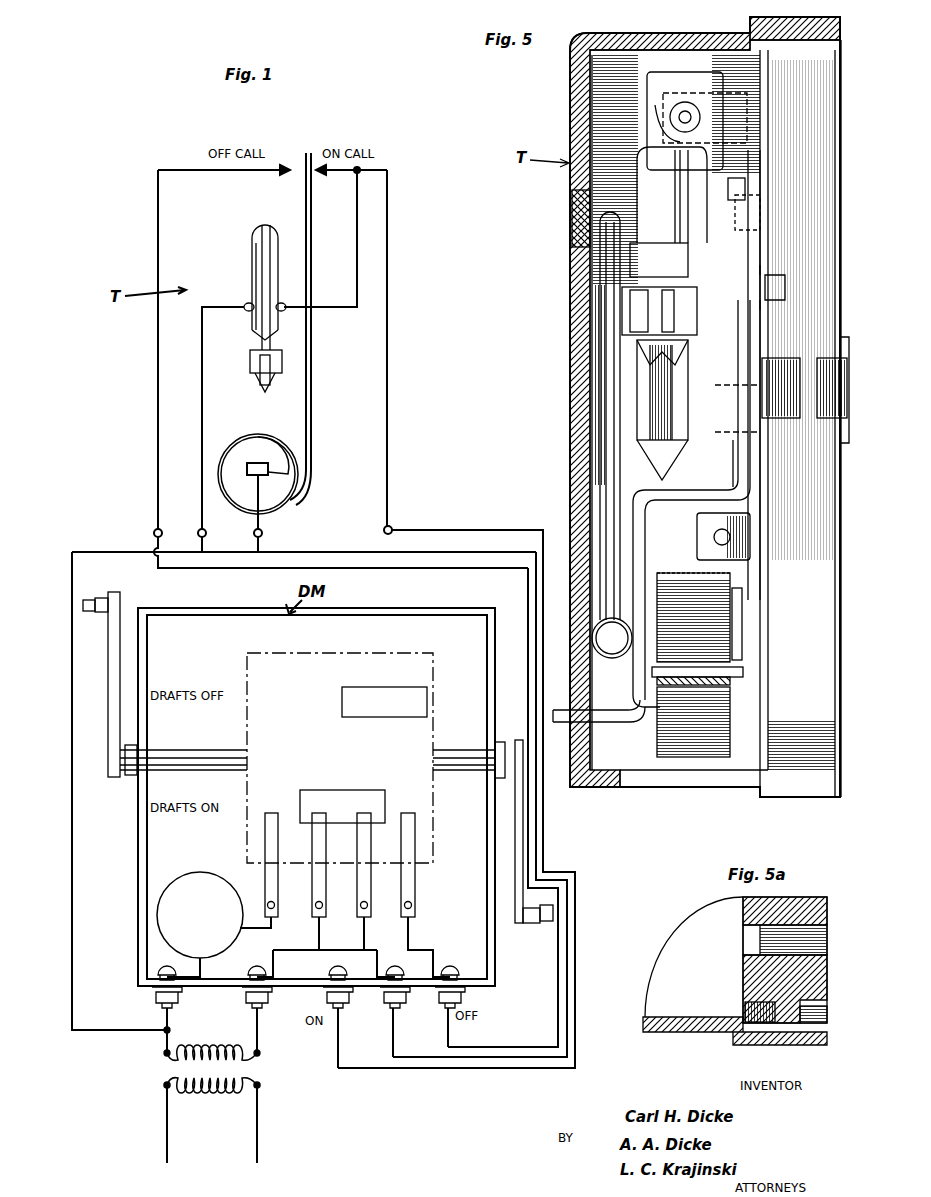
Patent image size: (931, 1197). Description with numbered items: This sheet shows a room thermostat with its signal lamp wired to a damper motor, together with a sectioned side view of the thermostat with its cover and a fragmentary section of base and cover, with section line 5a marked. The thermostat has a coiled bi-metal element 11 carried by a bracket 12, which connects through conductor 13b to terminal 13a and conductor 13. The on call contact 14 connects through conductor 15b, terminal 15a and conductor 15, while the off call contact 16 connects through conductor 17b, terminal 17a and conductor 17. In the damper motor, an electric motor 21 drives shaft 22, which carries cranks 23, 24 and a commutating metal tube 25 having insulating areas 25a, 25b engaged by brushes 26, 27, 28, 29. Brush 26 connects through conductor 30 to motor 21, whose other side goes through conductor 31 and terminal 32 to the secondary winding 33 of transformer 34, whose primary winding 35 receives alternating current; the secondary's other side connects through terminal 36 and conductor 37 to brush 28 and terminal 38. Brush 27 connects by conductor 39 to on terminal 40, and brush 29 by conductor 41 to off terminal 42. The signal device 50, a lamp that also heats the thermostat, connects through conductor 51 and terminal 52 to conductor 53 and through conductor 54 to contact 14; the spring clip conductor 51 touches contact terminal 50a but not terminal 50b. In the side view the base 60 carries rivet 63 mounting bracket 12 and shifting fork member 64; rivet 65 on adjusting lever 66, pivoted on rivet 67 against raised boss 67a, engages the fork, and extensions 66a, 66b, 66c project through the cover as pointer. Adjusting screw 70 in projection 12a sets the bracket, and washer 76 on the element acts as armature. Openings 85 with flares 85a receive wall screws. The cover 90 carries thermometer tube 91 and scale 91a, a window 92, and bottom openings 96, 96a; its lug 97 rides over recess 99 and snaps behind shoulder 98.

In FIG. 1, the coiled bi-metal element 11 is at (300, 500).
In FIG. 5, the coiled bi-metal element 11 is at (731, 732).
In FIG. 1, the bracket 12 is at (262, 456).
In FIG. 5, the bracket 12 is at (732, 688).
In FIG. 5, the projection 12a is at (697, 522).
In FIG. 1, the conductor 13 is at (335, 552).
In FIG. 1, the terminal 13a is at (263, 533).
In FIG. 1, the conductor 13b is at (262, 488).
In FIG. 1, the on call contact 14 is at (320, 172).
In FIG. 1, the conductor 15 is at (462, 531).
In FIG. 1, the terminal 15a is at (393, 530).
In FIG. 1, the conductor 15b is at (388, 278).
In FIG. 1, the off call contact 16 is at (284, 175).
In FIG. 1, the conductor 17 is at (398, 572).
In FIG. 1, the terminal 17a is at (154, 532).
In FIG. 1, the conductor 17b is at (156, 401).
In FIG. 1, the electric motor 21 is at (212, 864).
In FIG. 1, the shaft 22 is at (206, 740).
In FIG. 1, the crank 23 is at (107, 698).
In FIG. 1, the crank 24 is at (518, 928).
In FIG. 1, the metal tube 25 is at (435, 815).
In FIG. 1, the insulating area 25a is at (384, 777).
In FIG. 1, the insulating area 25b is at (372, 676).
In FIG. 1, the brush 26 is at (265, 892).
In FIG. 1, the brush 27 is at (312, 892).
In FIG. 1, the brush 28 is at (357, 890).
In FIG. 1, the brush 29 is at (415, 890).
In FIG. 1, the conductor 30 is at (250, 932).
In FIG. 1, the conductor 31 is at (202, 966).
In FIG. 1, the terminal 32 is at (152, 998).
In FIG. 1, the secondary winding 33 is at (212, 1040).
In FIG. 1, the transformer 34 is at (152, 1072).
In FIG. 1, the primary winding 35 is at (198, 1095).
In FIG. 1, the terminal 36 is at (242, 998).
In FIG. 1, the conductor 37 is at (280, 960).
In FIG. 1, the terminal 38 is at (380, 997).
In FIG. 1, the conductor 39 is at (321, 934).
In FIG. 1, the on terminal 40 is at (323, 998).
In FIG. 1, the conductor 41 is at (412, 931).
In FIG. 1, the off terminal 42 is at (436, 998).
In FIG. 1, the signal device 50 is at (240, 279).
In FIG. 5, the signal device 50 is at (664, 313).
In FIG. 1, the contact terminal 50a is at (250, 364).
In FIG. 1, the terminal 50b is at (278, 366).
In FIG. 1, the conductor 51 is at (200, 340).
In FIG. 1, the terminal 52 is at (206, 536).
In FIG. 1, the conductor 53 is at (104, 546).
In FIG. 1, the conductor 54 is at (327, 303).
In FIG. 5, the section line 5a is at (833, 393).
In FIG. 5, the base 60 is at (804, 418).
In FIG. 5A, the base 60 is at (826, 901).
In FIG. 5, the rivet 63 is at (740, 600).
In FIG. 5, the shifting fork member 64 is at (757, 255).
In FIG. 5, the rivet 65 is at (787, 289).
In FIG. 5, the adjusting lever 66 is at (738, 410).
In FIG. 5, the outward extension 66a is at (728, 484).
In FIG. 5, the vertical extension 66b is at (640, 538).
In FIG. 5, the horizontal extension 66c is at (610, 732).
In FIG. 5, the rivet 67 is at (748, 208).
In FIG. 5, the raised boss 67a is at (748, 185).
In FIG. 5, the adjusting screw 70 is at (714, 543).
In FIG. 5, the soft steel washer 76 is at (654, 118).
In FIG. 5A, the opening 85 is at (762, 951).
In FIG. 5A, the flare 85a is at (742, 946).
In FIG. 5, the cover 90 is at (568, 125).
In FIG. 5A, the cover 90 is at (663, 1033).
In FIG. 5, the thermometer tube 91 is at (575, 250).
In FIG. 5, the thermometer scale 91a is at (596, 366).
In FIG. 5, the window 92 is at (572, 207).
In FIG. 5, the opening 96 is at (668, 788).
In FIG. 5, the opening 96a is at (797, 798).
In FIG. 5A, the lug 97 is at (803, 1046).
In FIG. 5, the shoulder 98 is at (833, 358).
In FIG. 5A, the shoulder 98 is at (826, 1024).
In FIG. 5, the recess 99 is at (775, 358).
In FIG. 5A, the recess 99 is at (745, 1010).